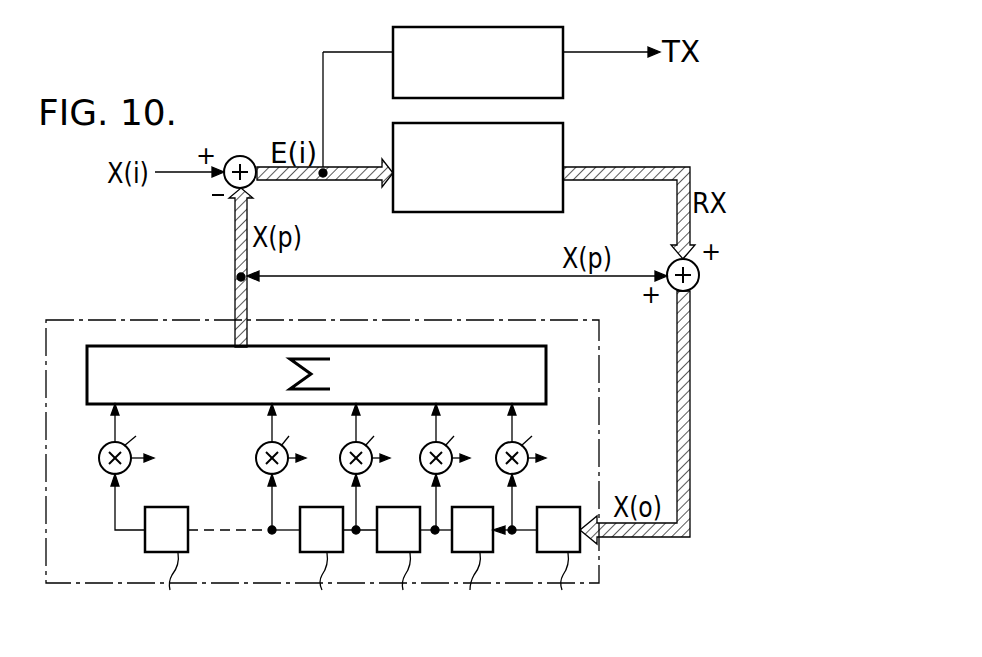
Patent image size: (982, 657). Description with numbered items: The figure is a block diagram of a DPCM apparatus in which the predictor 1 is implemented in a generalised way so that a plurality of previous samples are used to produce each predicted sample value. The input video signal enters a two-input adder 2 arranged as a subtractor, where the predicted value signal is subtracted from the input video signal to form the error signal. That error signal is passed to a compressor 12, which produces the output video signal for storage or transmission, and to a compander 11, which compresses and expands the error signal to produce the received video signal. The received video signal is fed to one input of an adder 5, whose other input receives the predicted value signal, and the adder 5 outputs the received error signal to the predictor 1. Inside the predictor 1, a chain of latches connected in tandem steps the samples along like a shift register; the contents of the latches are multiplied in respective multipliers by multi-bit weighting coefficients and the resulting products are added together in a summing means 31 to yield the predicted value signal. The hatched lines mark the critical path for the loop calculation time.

The predictor 1 is at (122, 318).
The adder 2 is at (238, 157).
The adder 5 is at (693, 288).
The compander 11 is at (553, 137).
The compressor 12 is at (553, 42).
The summing means 31 is at (438, 353).